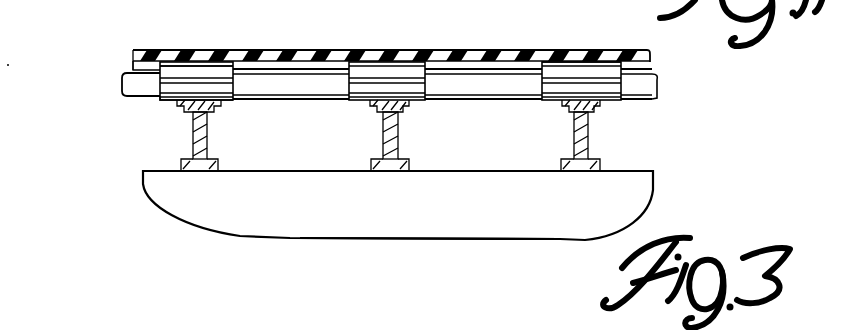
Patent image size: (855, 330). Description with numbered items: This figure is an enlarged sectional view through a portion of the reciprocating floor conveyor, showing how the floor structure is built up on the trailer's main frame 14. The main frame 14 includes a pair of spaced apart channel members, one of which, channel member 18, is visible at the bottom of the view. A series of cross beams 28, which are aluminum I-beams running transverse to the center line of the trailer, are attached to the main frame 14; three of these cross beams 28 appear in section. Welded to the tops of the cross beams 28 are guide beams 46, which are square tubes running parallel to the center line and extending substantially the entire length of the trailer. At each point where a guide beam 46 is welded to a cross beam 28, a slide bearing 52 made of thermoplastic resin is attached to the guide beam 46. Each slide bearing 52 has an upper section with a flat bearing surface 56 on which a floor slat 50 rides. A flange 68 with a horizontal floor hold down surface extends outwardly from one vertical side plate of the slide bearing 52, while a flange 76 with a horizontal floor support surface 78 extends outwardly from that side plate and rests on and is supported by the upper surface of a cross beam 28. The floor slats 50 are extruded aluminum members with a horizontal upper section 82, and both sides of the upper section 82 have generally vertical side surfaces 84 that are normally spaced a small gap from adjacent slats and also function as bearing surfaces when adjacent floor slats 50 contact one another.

The main frame 14 is at (268, 240).
The channel member 18 is at (417, 212).
The cross beams 28 is at (201, 133).
The guide beams 46 is at (470, 84).
The floor slats 50 is at (575, 60).
The slide bearings 52 is at (197, 62).
The flat bearing surface 56 is at (220, 59).
The flange 68 is at (158, 69).
The flange 76 is at (173, 102).
The horizontal floor support surface 78 is at (160, 89).
The horizontal upper section 82 is at (297, 57).
The vertical side surfaces 84 is at (182, 76).